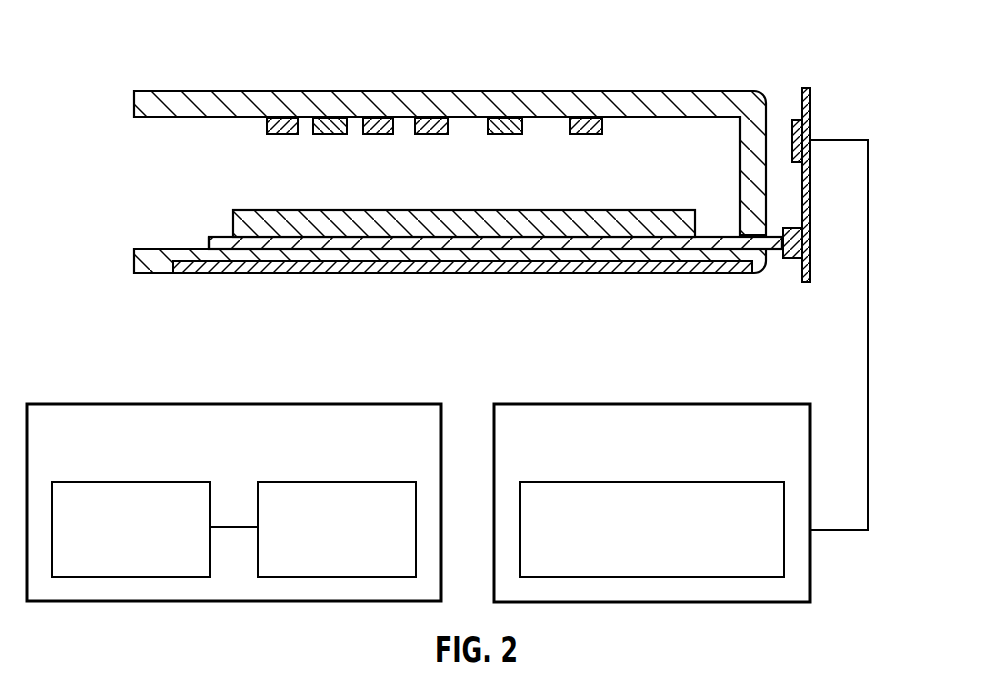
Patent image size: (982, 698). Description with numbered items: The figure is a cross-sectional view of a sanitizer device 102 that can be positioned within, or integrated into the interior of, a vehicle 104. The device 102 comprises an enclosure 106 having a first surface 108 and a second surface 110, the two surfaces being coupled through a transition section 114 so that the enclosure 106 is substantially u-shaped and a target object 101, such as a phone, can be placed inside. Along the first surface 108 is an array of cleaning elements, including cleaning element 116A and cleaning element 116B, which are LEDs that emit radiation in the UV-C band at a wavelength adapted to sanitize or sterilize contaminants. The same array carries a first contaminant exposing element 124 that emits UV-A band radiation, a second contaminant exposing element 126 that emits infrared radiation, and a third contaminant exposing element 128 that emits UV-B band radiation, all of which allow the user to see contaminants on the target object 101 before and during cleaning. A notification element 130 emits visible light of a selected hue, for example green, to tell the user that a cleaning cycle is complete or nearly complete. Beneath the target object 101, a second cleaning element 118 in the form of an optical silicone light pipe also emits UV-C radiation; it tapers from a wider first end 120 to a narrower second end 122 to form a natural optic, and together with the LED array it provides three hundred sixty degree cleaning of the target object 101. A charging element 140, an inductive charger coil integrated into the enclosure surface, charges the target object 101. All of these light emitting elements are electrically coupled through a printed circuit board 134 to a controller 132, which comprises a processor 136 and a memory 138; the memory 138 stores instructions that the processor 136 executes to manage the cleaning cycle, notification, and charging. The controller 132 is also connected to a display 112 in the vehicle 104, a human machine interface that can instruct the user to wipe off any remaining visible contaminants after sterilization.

The target object 101 is at (297, 223).
The device 102 is at (130, 40).
The vehicle 104 is at (565, 404).
The enclosure 106 is at (468, 129).
The first surface 108 is at (174, 108).
The second surface 110 is at (150, 258).
The display 112 is at (588, 482).
The transition section 114 is at (748, 160).
The cleaning element 116A is at (583, 122).
The cleaning element 116B is at (431, 120).
The second cleaning element 118 is at (368, 243).
The first end 120 is at (774, 249).
The second end 122 is at (212, 237).
The first contaminant exposing element 124 is at (328, 118).
The second contaminant exposing element 126 is at (374, 118).
The third contaminant exposing element 128 is at (285, 118).
The notification element 130 is at (510, 122).
The controller 132 is at (807, 138).
The printed circuit board 134 is at (808, 90).
The processor 136 is at (122, 482).
The memory 138 is at (330, 482).
The charging element 140 is at (302, 268).